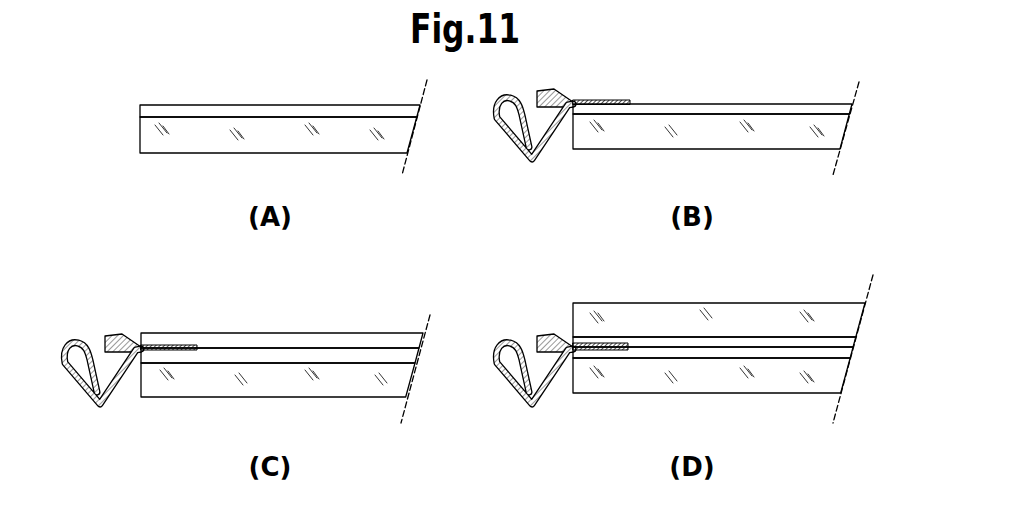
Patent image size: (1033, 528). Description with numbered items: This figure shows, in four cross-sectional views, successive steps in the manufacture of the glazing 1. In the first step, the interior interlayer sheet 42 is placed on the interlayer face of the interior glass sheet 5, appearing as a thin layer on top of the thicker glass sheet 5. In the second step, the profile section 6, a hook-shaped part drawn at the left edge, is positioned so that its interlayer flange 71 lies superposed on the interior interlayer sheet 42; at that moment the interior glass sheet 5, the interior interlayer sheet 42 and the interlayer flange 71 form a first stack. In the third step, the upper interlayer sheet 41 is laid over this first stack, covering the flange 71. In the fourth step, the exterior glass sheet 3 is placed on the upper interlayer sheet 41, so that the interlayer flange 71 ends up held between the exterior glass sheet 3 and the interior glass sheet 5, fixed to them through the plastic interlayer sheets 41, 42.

The glazing 1 is at (807, 260).
The exterior glass sheet 3 is at (637, 307).
The interior glass sheet 5 is at (193, 153).
The profile section 6 is at (485, 147).
The upper interlayer sheet 41 is at (323, 338).
The interior interlayer sheet 42 is at (252, 104).
The interlayer flange 71 is at (587, 104).